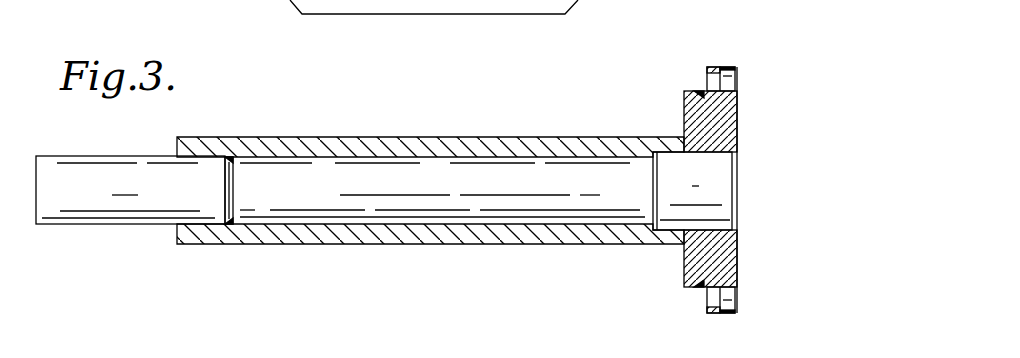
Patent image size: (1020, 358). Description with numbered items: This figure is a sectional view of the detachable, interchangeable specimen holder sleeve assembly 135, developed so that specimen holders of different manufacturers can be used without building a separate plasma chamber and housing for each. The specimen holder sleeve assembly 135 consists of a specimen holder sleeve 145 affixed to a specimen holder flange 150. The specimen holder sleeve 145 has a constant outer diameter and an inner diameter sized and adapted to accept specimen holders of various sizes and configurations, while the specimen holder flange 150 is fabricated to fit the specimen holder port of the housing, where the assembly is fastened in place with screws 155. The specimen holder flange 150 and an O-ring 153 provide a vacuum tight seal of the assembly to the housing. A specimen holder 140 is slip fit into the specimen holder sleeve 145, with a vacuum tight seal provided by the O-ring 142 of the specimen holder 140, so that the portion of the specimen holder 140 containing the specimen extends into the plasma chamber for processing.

The specimen holder sleeve assembly 135 is at (603, 245).
The specimen holder 140 is at (393, 200).
The O-ring 142 is at (233, 244).
The specimen holder sleeve 145 is at (345, 140).
The specimen holder flange 150 is at (728, 122).
The O-ring 153 is at (698, 92).
The screws 155 is at (788, 33).